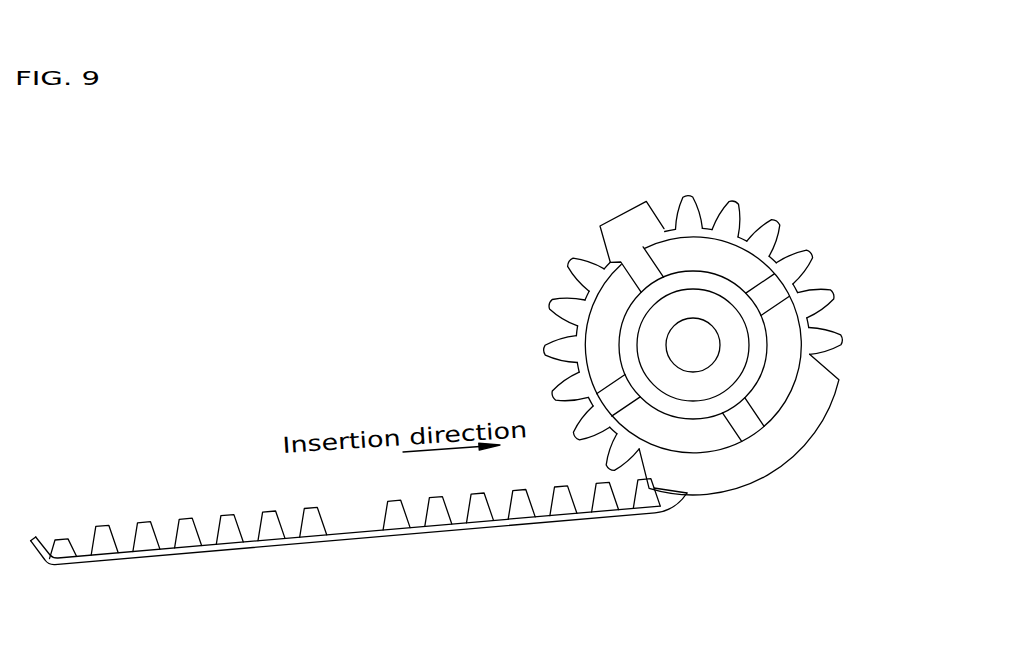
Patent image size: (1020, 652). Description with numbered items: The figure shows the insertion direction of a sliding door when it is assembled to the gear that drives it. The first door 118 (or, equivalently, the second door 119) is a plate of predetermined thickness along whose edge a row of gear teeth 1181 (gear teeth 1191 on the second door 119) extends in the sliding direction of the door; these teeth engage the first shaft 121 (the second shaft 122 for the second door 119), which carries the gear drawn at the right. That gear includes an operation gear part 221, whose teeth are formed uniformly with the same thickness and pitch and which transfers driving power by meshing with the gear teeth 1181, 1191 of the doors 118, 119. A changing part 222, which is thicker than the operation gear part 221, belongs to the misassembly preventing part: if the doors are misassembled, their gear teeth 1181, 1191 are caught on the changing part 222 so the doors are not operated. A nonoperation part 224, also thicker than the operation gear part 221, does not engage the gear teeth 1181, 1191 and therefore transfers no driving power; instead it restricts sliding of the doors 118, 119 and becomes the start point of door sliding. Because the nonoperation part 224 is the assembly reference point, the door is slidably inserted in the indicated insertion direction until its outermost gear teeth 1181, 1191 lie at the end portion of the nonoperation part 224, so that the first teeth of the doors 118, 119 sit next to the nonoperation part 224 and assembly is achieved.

The first shaft 121 is at (747, 318).
The second shaft 122 is at (693, 345).
The operation gear part 221 is at (730, 200).
The changing part 222 is at (615, 212).
The nonoperation part 224 is at (770, 478).
The first door 118 is at (359, 550).
The second door 119 is at (353, 542).
The gear teeth 1181 is at (355, 509).
The gear teeth 1191 is at (102, 520).